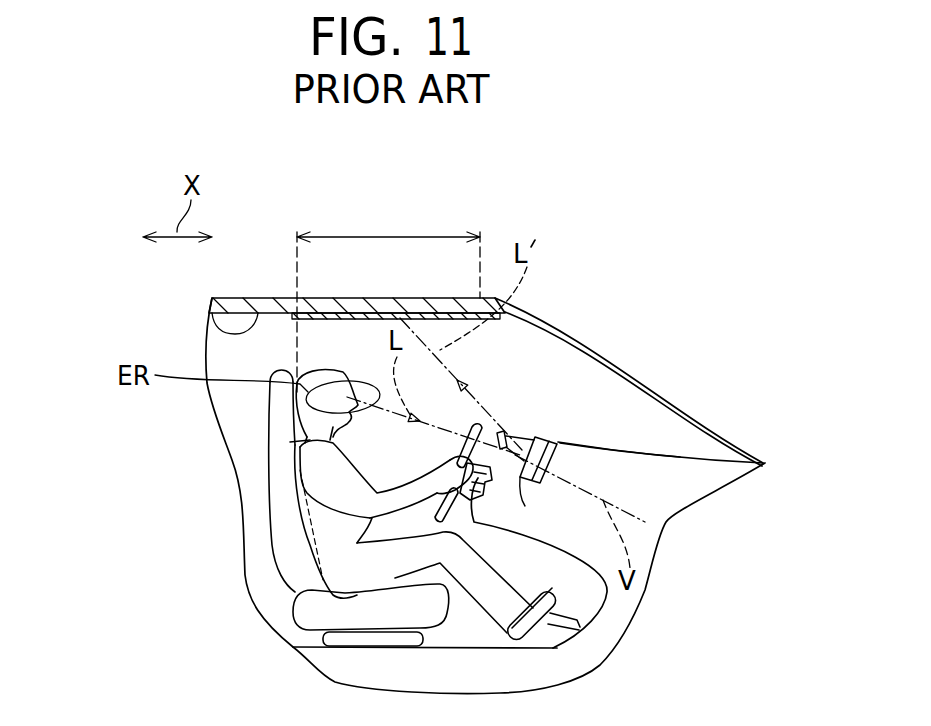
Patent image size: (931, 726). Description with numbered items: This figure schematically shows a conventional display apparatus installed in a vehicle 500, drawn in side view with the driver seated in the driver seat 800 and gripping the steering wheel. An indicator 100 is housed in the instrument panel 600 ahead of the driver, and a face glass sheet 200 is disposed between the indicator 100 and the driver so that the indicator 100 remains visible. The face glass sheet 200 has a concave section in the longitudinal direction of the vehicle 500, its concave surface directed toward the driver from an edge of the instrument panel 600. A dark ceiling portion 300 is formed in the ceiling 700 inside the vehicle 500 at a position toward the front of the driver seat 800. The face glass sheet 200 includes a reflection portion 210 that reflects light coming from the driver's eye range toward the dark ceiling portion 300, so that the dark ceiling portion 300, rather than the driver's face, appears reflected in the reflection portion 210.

The indicator 100 is at (558, 454).
The face glass sheet 200 is at (530, 440).
The reflection portion 210 is at (522, 480).
The dark ceiling portion 300 is at (367, 317).
The vehicle 500 is at (542, 299).
The instrument panel 600 is at (568, 441).
The ceiling 700 is at (213, 322).
The driver seat 800 is at (280, 505).